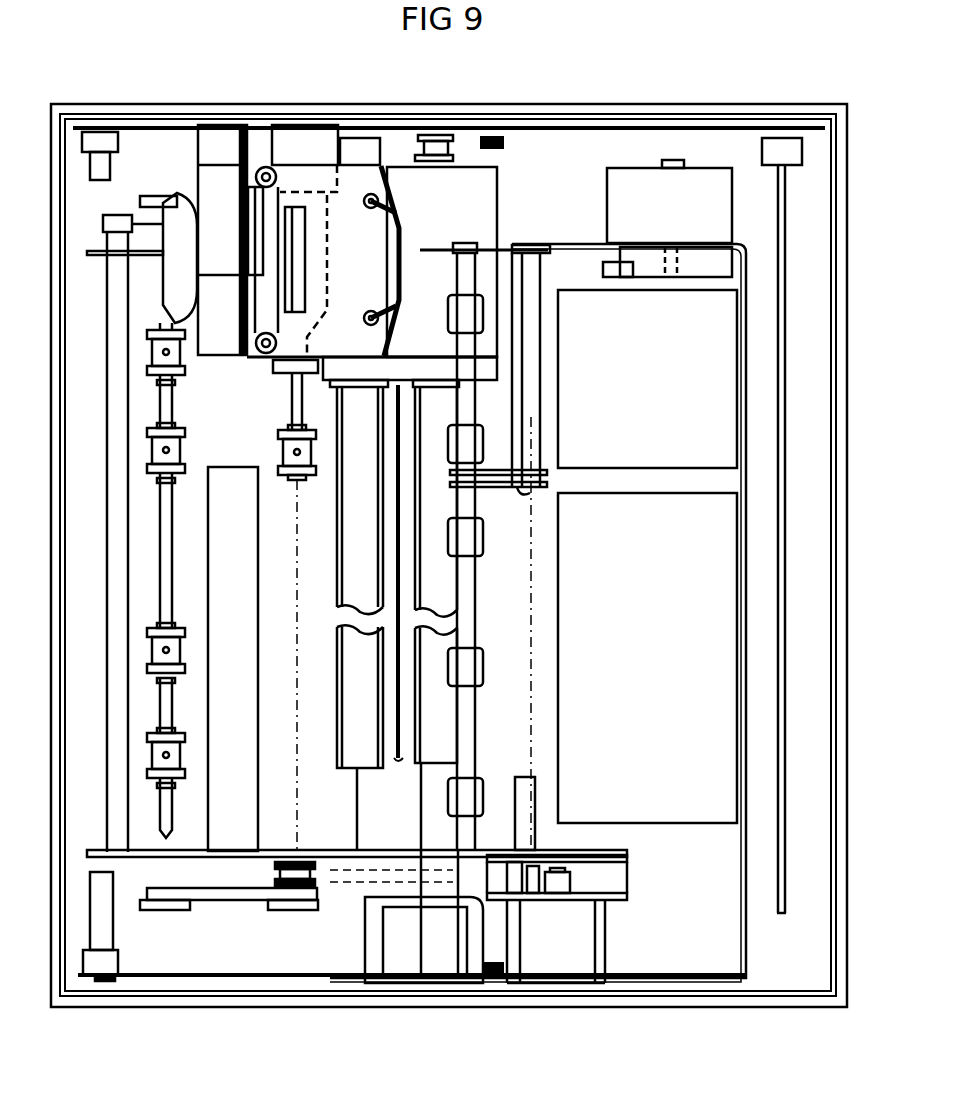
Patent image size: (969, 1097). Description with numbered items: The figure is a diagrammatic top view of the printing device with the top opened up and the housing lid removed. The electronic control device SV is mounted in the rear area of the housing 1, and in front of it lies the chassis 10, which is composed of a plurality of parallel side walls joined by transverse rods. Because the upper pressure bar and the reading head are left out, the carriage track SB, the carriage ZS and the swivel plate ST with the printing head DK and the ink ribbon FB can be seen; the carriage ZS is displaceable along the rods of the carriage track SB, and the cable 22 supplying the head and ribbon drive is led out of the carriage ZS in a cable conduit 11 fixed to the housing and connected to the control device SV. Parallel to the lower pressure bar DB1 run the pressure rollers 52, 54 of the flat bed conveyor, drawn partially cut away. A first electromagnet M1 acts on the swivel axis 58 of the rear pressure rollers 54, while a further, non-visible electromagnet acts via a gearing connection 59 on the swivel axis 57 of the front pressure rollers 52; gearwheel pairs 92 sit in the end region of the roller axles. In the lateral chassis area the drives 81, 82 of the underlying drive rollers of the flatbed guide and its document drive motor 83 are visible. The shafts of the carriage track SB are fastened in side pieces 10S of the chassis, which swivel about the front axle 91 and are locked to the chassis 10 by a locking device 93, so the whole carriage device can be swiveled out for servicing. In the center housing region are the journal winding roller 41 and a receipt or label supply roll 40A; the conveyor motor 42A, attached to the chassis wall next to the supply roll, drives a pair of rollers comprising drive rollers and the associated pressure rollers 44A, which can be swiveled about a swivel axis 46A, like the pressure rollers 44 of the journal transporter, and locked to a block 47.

The housing 1 is at (838, 946).
The chassis 10 is at (567, 138).
The side pieces 10S is at (360, 130).
The cable conduit 11 is at (398, 765).
The cable 22 is at (415, 768).
The receipt or label supply roll 40A is at (620, 409).
The journal winding roller 41 is at (627, 587).
The conveyor motor 42A is at (638, 230).
The pressure rollers 44 is at (511, 580).
The pressure rollers 44A is at (473, 317).
The swivel axis 46A is at (532, 270).
The block 47 is at (530, 832).
The front pressure rollers 52 is at (150, 368).
The rear pressure rollers 54 is at (283, 430).
The swivel axis 57 is at (117, 326).
The swivel axis 58 is at (342, 798).
The gearing connection 59 is at (130, 220).
The drive 81 is at (227, 895).
The drive 82 is at (327, 880).
The document drive motor 83 is at (535, 932).
The front axle 91 is at (100, 163).
The gearwheel pairs 92 is at (268, 907).
The locking device 93 is at (495, 137).
The lower pressure bar DB1 is at (212, 587).
The printing head DK is at (163, 282).
The ink ribbon FB is at (202, 257).
The first electromagnet M1 is at (388, 949).
The carriage track SB is at (432, 708).
The swivel plate ST is at (364, 255).
The control device SV is at (787, 375).
The carriage ZS is at (418, 215).